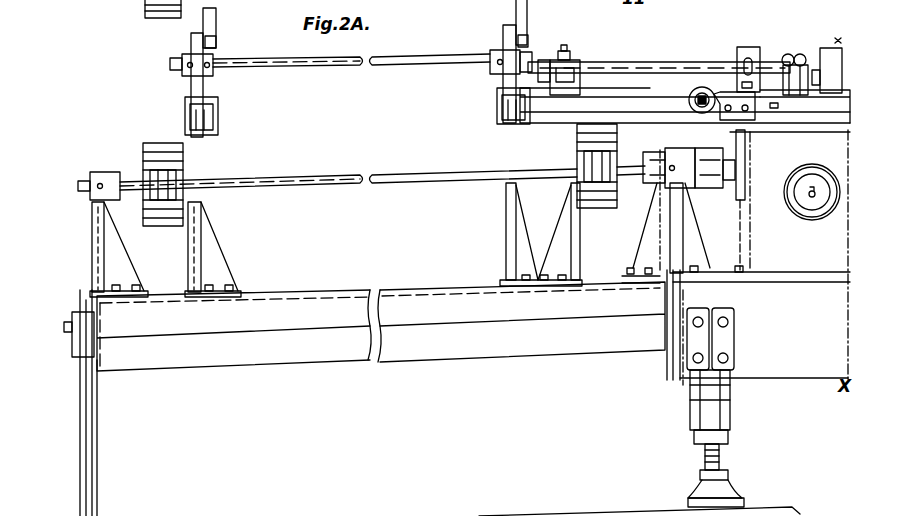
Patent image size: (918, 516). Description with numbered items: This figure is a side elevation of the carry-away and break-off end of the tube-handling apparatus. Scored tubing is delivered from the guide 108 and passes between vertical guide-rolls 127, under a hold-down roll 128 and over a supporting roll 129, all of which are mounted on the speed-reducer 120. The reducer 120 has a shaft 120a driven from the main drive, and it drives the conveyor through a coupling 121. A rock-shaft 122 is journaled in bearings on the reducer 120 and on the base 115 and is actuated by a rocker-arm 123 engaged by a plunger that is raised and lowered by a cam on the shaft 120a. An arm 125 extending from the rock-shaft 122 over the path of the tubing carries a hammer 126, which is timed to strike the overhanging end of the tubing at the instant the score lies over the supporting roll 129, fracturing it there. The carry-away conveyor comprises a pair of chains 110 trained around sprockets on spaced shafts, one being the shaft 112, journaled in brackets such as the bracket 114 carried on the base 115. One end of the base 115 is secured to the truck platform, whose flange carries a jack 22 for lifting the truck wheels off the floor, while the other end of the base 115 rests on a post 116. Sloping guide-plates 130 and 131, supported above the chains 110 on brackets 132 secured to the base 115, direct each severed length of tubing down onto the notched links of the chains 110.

The bracket 114 is at (104, 0).
The sloping guide-plate 131 is at (218, 100).
The chain 110 is at (156, 142).
The shaft 112 is at (346, 172).
The bracket 132 is at (204, 218).
The sloping guide-plate 130 is at (496, 94).
The rock-shaft 122 is at (643, 64).
The hammer 126 is at (630, 40).
The arm 125 is at (558, 52).
The supporting roll 129 is at (688, 86).
The hold-down roll 128 is at (740, 48).
The vertical guide-roll 127 is at (772, 60).
The rocker-arm 123 is at (836, 54).
The guide 108 is at (840, 94).
The coupling 121 is at (706, 146).
The speed-reducer 120 is at (757, 187).
The shaft 120a is at (805, 211).
The base 115 is at (406, 300).
The post 116 is at (94, 413).
The jack 22 is at (733, 412).